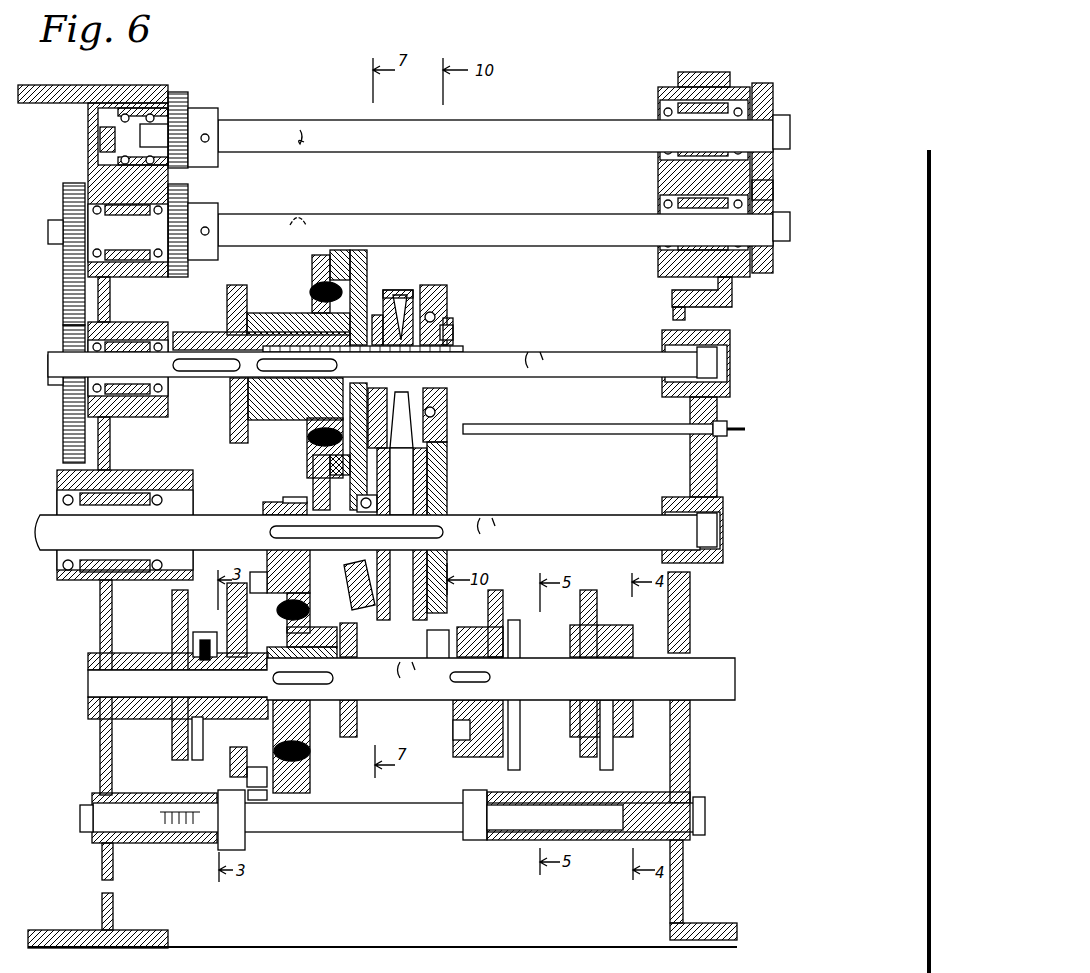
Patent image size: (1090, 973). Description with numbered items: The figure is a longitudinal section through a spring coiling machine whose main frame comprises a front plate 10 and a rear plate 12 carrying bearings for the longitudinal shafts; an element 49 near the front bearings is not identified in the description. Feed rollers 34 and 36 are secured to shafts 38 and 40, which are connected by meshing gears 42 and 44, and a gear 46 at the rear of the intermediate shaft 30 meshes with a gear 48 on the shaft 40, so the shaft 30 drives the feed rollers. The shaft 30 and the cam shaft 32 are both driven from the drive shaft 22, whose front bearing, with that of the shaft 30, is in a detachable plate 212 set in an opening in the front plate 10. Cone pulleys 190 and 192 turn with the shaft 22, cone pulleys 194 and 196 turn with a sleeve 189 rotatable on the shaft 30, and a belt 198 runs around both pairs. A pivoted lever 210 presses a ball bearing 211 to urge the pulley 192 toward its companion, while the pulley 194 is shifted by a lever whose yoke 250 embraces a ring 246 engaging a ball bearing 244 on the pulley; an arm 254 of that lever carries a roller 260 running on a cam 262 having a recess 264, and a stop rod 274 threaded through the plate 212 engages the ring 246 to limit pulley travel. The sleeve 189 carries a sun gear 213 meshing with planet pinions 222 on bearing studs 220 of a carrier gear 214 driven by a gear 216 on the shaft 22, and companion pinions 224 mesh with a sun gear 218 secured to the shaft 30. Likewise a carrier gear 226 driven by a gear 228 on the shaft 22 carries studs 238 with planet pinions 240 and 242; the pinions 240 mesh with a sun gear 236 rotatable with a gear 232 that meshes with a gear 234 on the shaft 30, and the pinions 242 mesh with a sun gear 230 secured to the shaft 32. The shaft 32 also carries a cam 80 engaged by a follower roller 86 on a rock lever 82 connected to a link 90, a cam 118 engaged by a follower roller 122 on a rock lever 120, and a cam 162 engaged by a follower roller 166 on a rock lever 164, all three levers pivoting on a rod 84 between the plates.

The front plate 10 is at (690, 607).
The rear plate 12 is at (100, 752).
The drive shaft 22 is at (210, 520).
The intermediate shaft 30 is at (528, 352).
The cam shaft 32 is at (395, 697).
The feed roller 34 is at (773, 95).
The feed roller 36 is at (773, 190).
The feed roller shaft 38 is at (530, 120).
The feed roller shaft 40 is at (543, 214).
The gear 42 is at (188, 97).
The gear 44 is at (188, 198).
The gear 46 is at (63, 427).
The gear 48 is at (63, 195).
The bearing housing 49 is at (662, 92).
The cam 80 is at (172, 735).
The rock lever 82 is at (208, 738).
The pivot rod 84 is at (402, 807).
The follower roller 86 is at (173, 686).
The link 90 is at (193, 636).
The cam 118 is at (589, 590).
The rock lever 120 is at (613, 750).
The follower roller 122 is at (580, 680).
The cam 162 is at (498, 595).
The rock lever 164 is at (520, 750).
The follower roller 166 is at (455, 683).
The sleeve 189 is at (452, 335).
The cone pulley 190 is at (410, 612).
The cone pulley 192 is at (382, 615).
The cone pulley 194 is at (412, 290).
The cone pulley 196 is at (390, 290).
The belt 198 is at (400, 295).
The lever 210 is at (355, 595).
The ball bearing 211 is at (357, 499).
The plate 212 is at (717, 468).
The sun gear 213 is at (355, 376).
The planet pinion carrier gear 214 is at (312, 272).
The gear 216 is at (313, 485).
The sun gear 218 is at (310, 420).
The bearing studs 220 is at (310, 288).
The planet pinions 222 is at (370, 255).
The planet pinions 224 is at (340, 250).
The planet pinion carrier gear 226 is at (310, 775).
The gear 228 is at (283, 499).
The sun gear 230 is at (318, 675).
The gear 232 is at (223, 762).
The gear 234 is at (230, 438).
The sun gear 236 is at (265, 675).
The bearing studs 238 is at (232, 620).
The planet pinions 240 is at (258, 572).
The planet pinions 242 is at (270, 532).
The ball bearing 244 is at (450, 320).
The ring 246 is at (447, 302).
The yoke 250 is at (445, 287).
The arm 254 is at (443, 640).
The roller 260 is at (432, 658).
The cam 262 is at (455, 757).
The recess 264 is at (475, 627).
The stop rod 274 is at (540, 434).